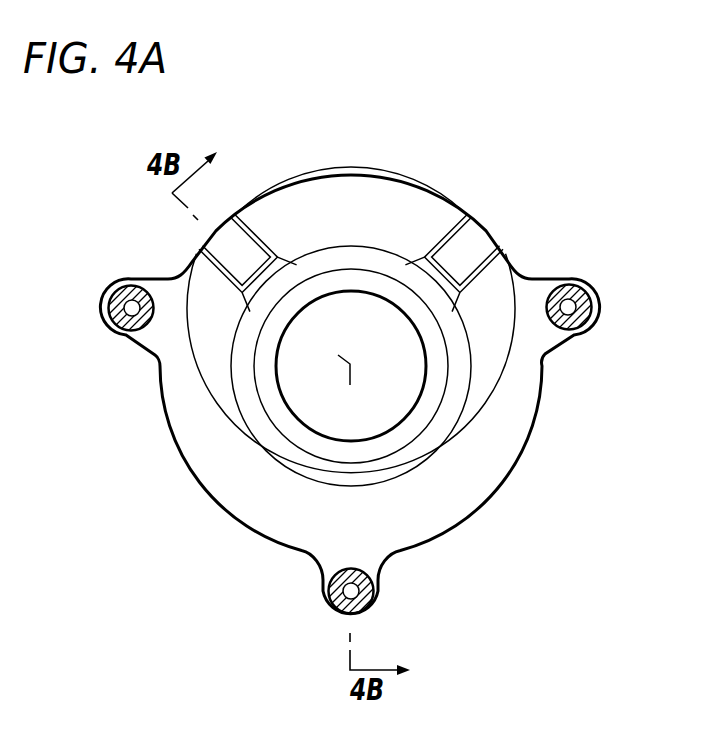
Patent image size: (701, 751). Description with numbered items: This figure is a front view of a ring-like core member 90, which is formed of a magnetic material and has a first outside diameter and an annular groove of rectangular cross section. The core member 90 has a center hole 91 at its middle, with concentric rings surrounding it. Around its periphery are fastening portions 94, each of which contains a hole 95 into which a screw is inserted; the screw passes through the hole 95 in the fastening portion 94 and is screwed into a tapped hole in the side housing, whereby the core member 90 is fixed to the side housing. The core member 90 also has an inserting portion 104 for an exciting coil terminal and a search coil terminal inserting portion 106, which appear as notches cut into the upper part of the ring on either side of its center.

The ring-like core member 90 is at (548, 250).
The center hole 91 is at (400, 422).
The fastening portion 94 is at (127, 332).
The hole 95 is at (126, 308).
The inserting portion for exciting coil terminal 104 is at (210, 239).
The search coil terminal inserting portion 106 is at (475, 237).